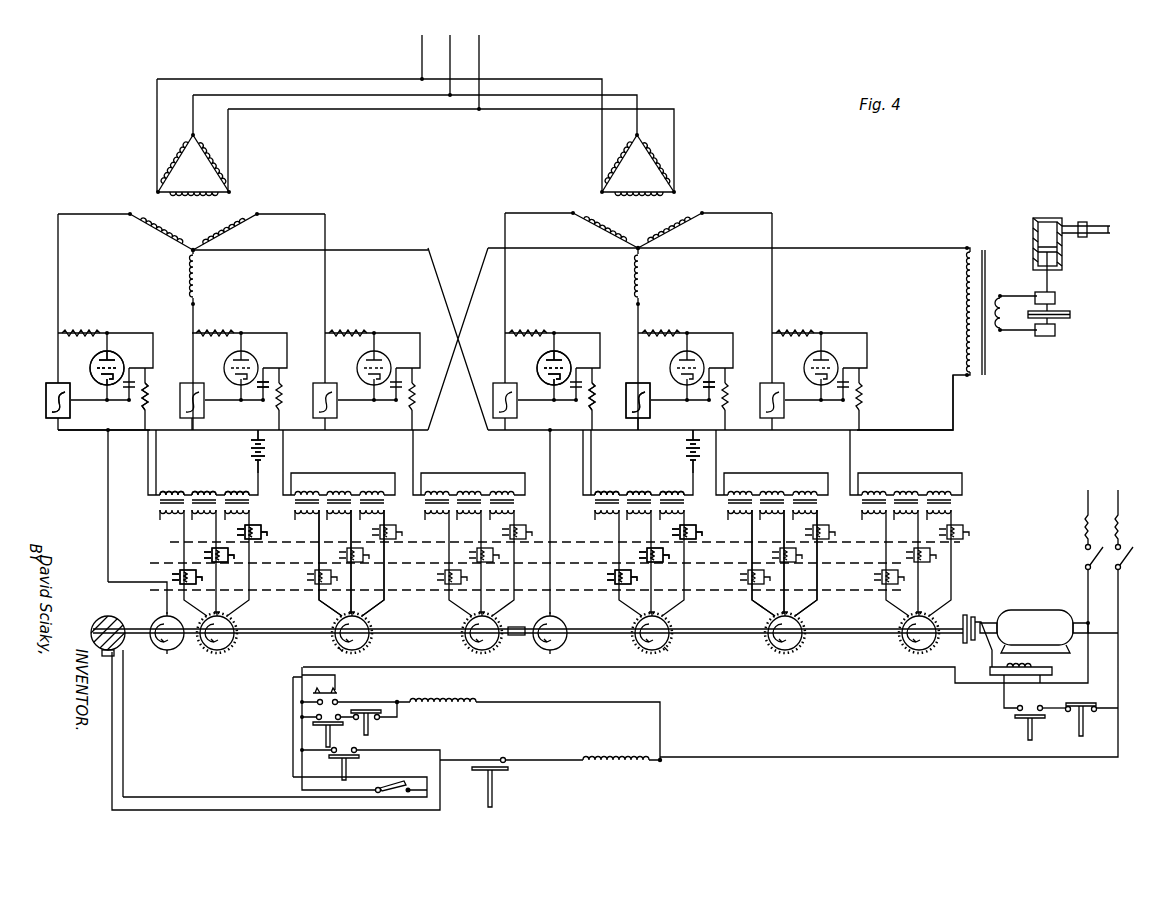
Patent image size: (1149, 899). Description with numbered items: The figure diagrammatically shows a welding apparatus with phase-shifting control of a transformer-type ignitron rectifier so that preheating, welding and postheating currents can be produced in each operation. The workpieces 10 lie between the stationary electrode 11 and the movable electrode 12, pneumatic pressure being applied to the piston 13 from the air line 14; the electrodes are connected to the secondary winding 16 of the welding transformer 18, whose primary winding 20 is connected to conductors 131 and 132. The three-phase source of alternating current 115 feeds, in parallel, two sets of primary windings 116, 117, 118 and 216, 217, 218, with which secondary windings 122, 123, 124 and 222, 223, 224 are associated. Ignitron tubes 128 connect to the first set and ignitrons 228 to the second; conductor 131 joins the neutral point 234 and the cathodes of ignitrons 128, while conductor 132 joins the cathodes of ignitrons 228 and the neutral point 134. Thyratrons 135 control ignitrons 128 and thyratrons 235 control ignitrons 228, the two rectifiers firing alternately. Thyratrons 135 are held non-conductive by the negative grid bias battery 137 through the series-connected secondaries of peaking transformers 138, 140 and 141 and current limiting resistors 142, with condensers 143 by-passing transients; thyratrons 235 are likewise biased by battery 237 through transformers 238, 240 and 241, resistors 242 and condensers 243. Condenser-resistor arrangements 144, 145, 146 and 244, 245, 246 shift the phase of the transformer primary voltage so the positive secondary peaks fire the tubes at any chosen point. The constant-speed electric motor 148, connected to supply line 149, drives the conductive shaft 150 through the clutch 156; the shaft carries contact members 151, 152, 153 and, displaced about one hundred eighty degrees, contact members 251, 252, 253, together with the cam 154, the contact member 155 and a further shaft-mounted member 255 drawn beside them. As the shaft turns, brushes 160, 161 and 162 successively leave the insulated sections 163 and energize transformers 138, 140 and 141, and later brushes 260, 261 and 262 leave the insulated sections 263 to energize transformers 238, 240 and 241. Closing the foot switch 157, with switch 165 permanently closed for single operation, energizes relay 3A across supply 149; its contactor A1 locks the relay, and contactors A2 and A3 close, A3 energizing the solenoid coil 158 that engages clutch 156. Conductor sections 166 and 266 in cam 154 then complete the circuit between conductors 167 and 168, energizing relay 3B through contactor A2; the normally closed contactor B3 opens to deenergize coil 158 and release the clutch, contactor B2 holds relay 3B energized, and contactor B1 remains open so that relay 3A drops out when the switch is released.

The workpieces 10 is at (1068, 313).
The stationary electrode 11 is at (1057, 331).
The movable electrode 12 is at (1057, 298).
The piston 13 is at (1047, 216).
The air line 14 is at (1100, 224).
The secondary winding 16 is at (1005, 332).
The welding transformer 18 is at (975, 239).
The primary winding 20 is at (965, 319).
The source of alternating current 115 is at (503, 54).
The primary winding 116 is at (176, 162).
The primary winding 117 is at (220, 197).
The primary winding 118 is at (224, 160).
The secondary winding 122 is at (150, 233).
The secondary winding 123 is at (198, 288).
The secondary winding 124 is at (240, 239).
The ignitron tube 128 is at (46, 392).
The conductor 131 is at (92, 432).
The conductor 132 is at (955, 429).
The neutral point 134 is at (196, 253).
The thyratron 135 is at (113, 355).
The negative grid bias battery 137 is at (255, 453).
The peaking transformer 138 is at (238, 492).
The peaking transformer 140 is at (205, 492).
The peaking transformer 141 is at (170, 492).
The current limiting resistor 142 is at (147, 388).
The condenser 143 is at (262, 392).
The condenser-resistor arrangement 144 is at (240, 537).
The condenser-resistor arrangement 145 is at (205, 557).
The condenser-resistor arrangement 146 is at (176, 578).
The electric motor 148 is at (1035, 610).
The electric supply line 149 is at (1090, 480).
The shaft 150 is at (745, 635).
The contact member 151 is at (218, 652).
The contact member 152 is at (362, 648).
The contact member 153 is at (492, 645).
The cam 154 is at (105, 615).
The contact member 155 is at (167, 652).
The clutch 156 is at (963, 642).
The foot switch 157 is at (338, 692).
The solenoid coil 158 is at (1004, 690).
The contact brush 160 is at (357, 618).
The contact brush 161 is at (338, 611).
The contact brush 162 is at (348, 618).
The insulated section 163 is at (336, 645).
The switch 165 is at (400, 786).
The conductor section 166 is at (108, 591).
The conductor 167 is at (123, 726).
The conductor 168 is at (112, 751).
The primary winding 216 is at (620, 162).
The primary winding 217 is at (665, 197).
The primary winding 218 is at (660, 160).
The secondary winding 222 is at (590, 222).
The secondary winding 223 is at (633, 275).
The secondary winding 224 is at (695, 235).
The ignitron 228 is at (628, 392).
The neutral point 234 is at (641, 252).
The thyratron 235 is at (560, 355).
The negative grid bias battery 237 is at (690, 453).
The peaking transformer 238 is at (673, 492).
The peaking transformer 240 is at (640, 492).
The peaking transformer 241 is at (605, 492).
The current limiting resistor 242 is at (590, 396).
The condenser 243 is at (707, 392).
The condenser-resistor arrangement 244 is at (694, 533).
The condenser-resistor arrangement 245 is at (662, 556).
The condenser-resistor arrangement 246 is at (630, 578).
The contact member 251 is at (640, 645).
The contact member 252 is at (785, 652).
The contact member 253 is at (915, 652).
The generator 255 is at (560, 620).
The contact brush 260 is at (797, 618).
The contact brush 261 is at (770, 613).
The contact brush 262 is at (778, 620).
The insulated section 263 is at (668, 643).
The conductor section 266 is at (167, 600).
The relay 3A is at (445, 699).
The relay 3B is at (598, 757).
The normally open contactor A1 is at (313, 724).
The contactor A2 is at (510, 772).
The contactor A3 is at (1018, 719).
The contactor B1 is at (382, 716).
The contactor B2 is at (360, 755).
The normally closed contactor B3 is at (1072, 716).